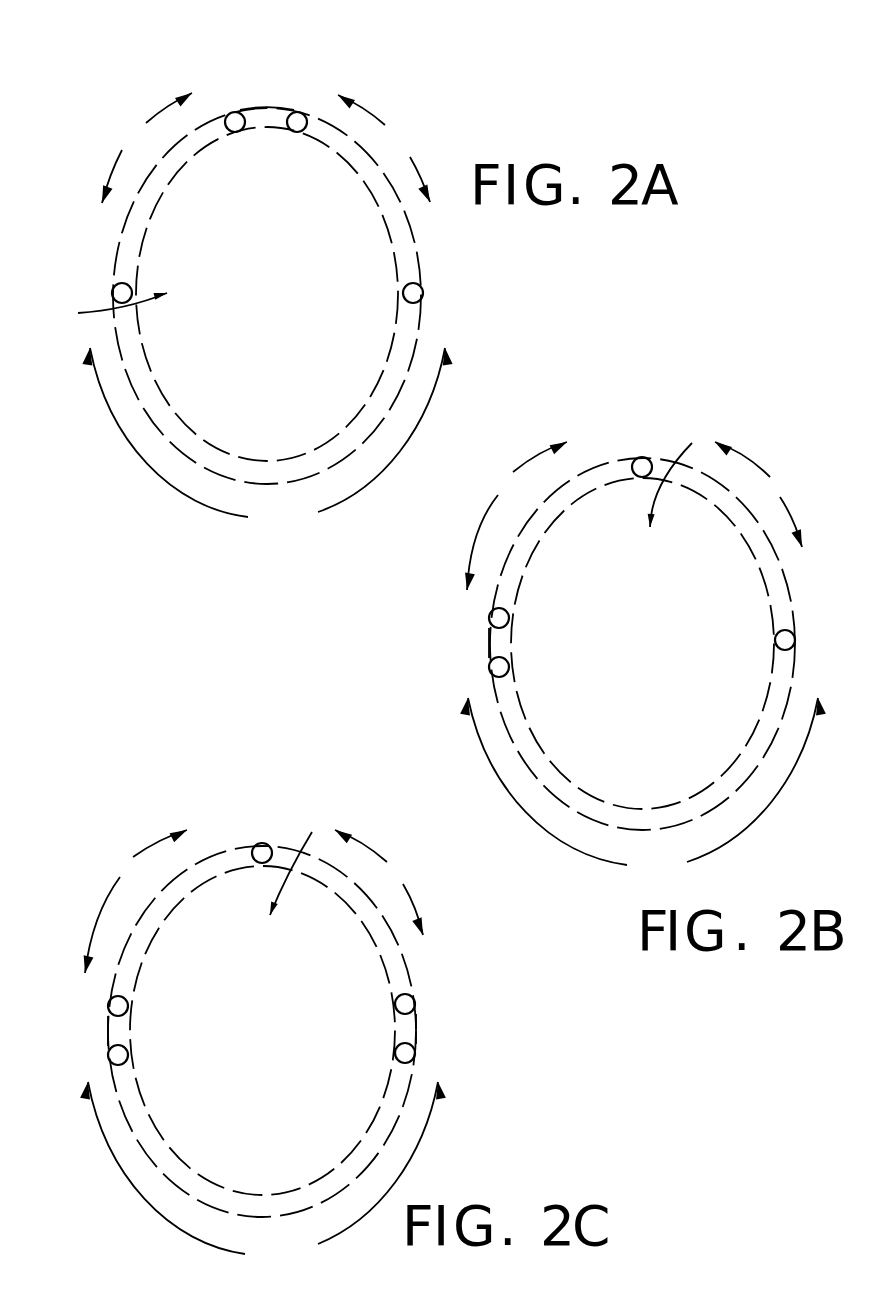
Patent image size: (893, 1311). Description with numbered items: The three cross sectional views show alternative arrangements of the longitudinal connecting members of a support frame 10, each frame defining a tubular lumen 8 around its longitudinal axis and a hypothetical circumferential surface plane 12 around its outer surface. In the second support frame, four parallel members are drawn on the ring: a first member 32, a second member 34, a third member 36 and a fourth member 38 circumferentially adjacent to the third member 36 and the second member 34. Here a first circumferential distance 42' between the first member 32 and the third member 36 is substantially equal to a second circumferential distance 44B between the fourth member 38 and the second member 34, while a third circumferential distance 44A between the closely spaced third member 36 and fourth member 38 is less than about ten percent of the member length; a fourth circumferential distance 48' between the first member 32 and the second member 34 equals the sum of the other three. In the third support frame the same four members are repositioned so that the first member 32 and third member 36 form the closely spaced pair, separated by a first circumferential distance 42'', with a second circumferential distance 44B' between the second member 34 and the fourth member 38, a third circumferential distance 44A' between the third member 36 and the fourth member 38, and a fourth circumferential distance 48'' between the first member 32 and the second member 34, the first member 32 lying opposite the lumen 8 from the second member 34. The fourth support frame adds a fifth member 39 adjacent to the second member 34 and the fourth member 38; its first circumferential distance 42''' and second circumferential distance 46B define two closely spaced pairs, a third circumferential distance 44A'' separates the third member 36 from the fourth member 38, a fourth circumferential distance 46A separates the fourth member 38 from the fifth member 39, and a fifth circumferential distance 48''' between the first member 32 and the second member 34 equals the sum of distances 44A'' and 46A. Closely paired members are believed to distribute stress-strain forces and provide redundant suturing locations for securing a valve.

In FIG. 2A, the tubular lumen 8 is at (113, 309).
In FIG. 2B, the tubular lumen 8 is at (677, 474).
In FIG. 2C, the tubular lumen 8 is at (300, 861).
In FIG. 2A, the support frame 10 is at (432, 326).
In FIG. 2B, the support frame 10 is at (800, 672).
In FIG. 2C, the support frame 10 is at (420, 958).
In FIG. 2A, the circumferential surface plane 12 is at (115, 258).
In FIG. 2B, the circumferential surface plane 12 is at (612, 460).
In FIG. 2C, the circumferential surface plane 12 is at (235, 847).
In FIG. 2A, the first member 32 is at (114, 287).
In FIG. 2B, the first member 32 is at (489, 668).
In FIG. 2C, the first member 32 is at (110, 1056).
In FIG. 2A, the second member 34 is at (423, 277).
In FIG. 2B, the second member 34 is at (795, 633).
In FIG. 2C, the second member 34 is at (415, 1053).
In FIG. 2A, the third member 36 is at (228, 114).
In FIG. 2B, the third member 36 is at (490, 617).
In FIG. 2C, the third member 36 is at (109, 1006).
In FIG. 2A, the fourth member 38 is at (305, 112).
In FIG. 2B, the fourth member 38 is at (642, 457).
In FIG. 2C, the fourth member 38 is at (263, 843).
In FIG. 2C, the fifth member 39 is at (417, 1003).
In FIG. 2A, the first circumferential distance 42' is at (145, 147).
In FIG. 2B, the first circumferential distance 42'' is at (441, 633).
In FIG. 2C, the first circumferential distance 42''' is at (69, 1020).
In FIG. 2A, the third circumferential distance 44A is at (273, 58).
In FIG. 2B, the third circumferential distance 44A' is at (515, 514).
In FIG. 2C, the third circumferential distance 44A'' is at (134, 900).
In FIG. 2A, the second circumferential distance 44B is at (385, 147).
In FIG. 2B, the second circumferential distance 44B' is at (762, 493).
In FIG. 2C, the fourth circumferential distance 46A is at (380, 881).
In FIG. 2C, the second circumferential distance 46B is at (417, 1028).
In FIG. 2A, the fourth circumferential distance 48' is at (267, 441).
In FIG. 2B, the fourth circumferential distance 48'' is at (643, 790).
In FIG. 2C, the fifth circumferential distance 48''' is at (263, 1175).